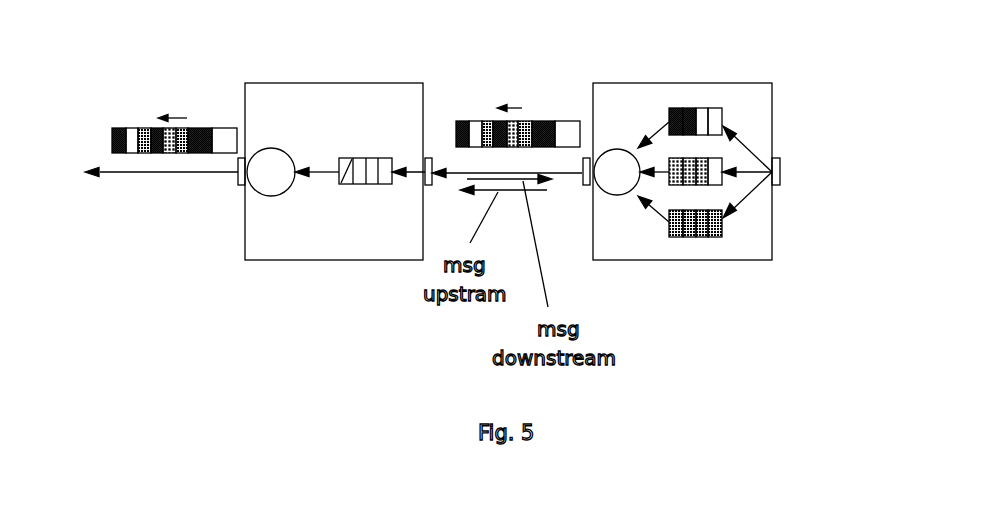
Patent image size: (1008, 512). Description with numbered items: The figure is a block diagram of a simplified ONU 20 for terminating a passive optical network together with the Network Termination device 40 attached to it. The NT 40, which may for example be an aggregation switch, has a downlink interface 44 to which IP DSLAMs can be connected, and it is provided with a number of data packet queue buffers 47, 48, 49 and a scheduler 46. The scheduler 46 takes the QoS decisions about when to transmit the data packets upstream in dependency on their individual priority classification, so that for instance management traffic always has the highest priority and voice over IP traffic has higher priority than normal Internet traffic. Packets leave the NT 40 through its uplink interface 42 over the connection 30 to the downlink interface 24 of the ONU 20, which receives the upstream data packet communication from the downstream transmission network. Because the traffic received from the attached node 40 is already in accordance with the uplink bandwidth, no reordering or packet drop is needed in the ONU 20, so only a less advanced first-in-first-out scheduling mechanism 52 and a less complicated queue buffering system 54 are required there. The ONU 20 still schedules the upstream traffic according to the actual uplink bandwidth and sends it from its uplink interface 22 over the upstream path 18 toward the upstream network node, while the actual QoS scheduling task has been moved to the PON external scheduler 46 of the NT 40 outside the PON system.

The upstream link 18 is at (138, 172).
The ONU 20 is at (265, 83).
The uplink interface 22 is at (240, 186).
The downlink interface 24 is at (433, 158).
The link 30 is at (573, 174).
The Network Termination device 40 is at (695, 83).
The uplink interface 42 is at (589, 158).
The downlink interface 44 is at (780, 163).
The scheduler 46 is at (618, 197).
The data packet queue buffer 47 is at (687, 112).
The data packet queue buffer 48 is at (722, 186).
The data packet queue buffer 49 is at (685, 233).
The scheduling mechanism 52 is at (272, 197).
The queue buffering system 54 is at (357, 185).